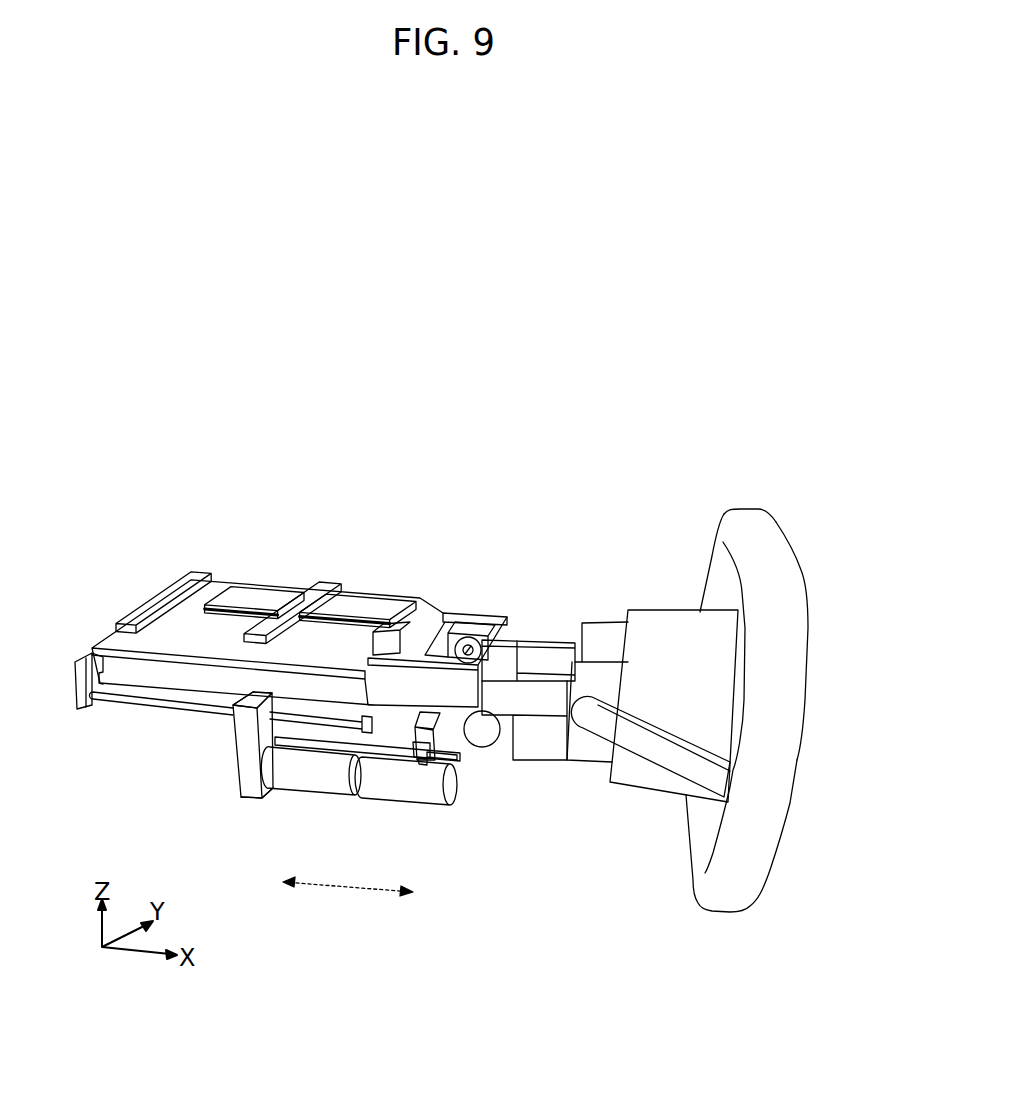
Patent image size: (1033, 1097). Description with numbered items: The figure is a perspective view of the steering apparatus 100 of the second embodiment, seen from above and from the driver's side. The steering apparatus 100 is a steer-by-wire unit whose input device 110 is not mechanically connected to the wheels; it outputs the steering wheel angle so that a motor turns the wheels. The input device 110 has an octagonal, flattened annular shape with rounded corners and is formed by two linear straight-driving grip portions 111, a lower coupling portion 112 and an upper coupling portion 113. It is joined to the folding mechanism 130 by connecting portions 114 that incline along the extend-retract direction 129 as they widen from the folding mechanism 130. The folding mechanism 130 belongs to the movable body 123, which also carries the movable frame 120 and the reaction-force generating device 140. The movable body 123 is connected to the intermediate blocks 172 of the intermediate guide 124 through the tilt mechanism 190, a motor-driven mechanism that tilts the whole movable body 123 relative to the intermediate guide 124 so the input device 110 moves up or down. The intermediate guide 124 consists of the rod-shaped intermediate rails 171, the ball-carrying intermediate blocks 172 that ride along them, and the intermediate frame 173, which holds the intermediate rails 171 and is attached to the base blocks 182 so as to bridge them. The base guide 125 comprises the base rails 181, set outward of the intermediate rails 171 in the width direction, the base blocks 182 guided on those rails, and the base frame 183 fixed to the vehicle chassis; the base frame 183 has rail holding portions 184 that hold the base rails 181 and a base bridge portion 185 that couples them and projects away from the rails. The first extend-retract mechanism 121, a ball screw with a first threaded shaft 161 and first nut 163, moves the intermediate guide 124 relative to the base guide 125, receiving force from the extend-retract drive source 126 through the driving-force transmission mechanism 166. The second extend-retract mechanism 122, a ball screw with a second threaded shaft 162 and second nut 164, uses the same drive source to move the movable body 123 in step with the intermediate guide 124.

The steering apparatus 100 is at (664, 416).
The input device 110 is at (773, 494).
The straight-driving grip portions 111 is at (717, 572).
The lower coupling portion 112 is at (685, 826).
The upper coupling portion 113 is at (770, 538).
The connecting portions 114 is at (685, 752).
The movable frame 120 is at (508, 700).
The first extend-retract mechanism 121 is at (245, 758).
The second extend-retract mechanism 122 is at (379, 804).
The movable body 123 is at (560, 638).
The intermediate guide 124 is at (433, 620).
The base guide 125 is at (243, 592).
The extend-retract drive source 126 is at (430, 790).
The extend-retract direction 129 is at (353, 893).
The folding mechanism 130 is at (607, 636).
The reaction-force generating device 140 is at (482, 747).
The first threaded shaft 161 is at (130, 702).
The second threaded shaft 162 is at (352, 745).
The first nut 163 is at (250, 712).
The second nut 164 is at (420, 762).
The driving-force transmission mechanism 166 is at (262, 788).
The intermediate rails 171 is at (387, 630).
The intermediate blocks 172 is at (488, 630).
The intermediate frame 173 is at (466, 615).
The base rails 181 is at (270, 610).
The base blocks 182 is at (366, 708).
The base frame 183 is at (372, 570).
The rail holding portions 184 is at (217, 587).
The base bridge portion 185 is at (308, 595).
The tilt mechanism 190 is at (497, 632).